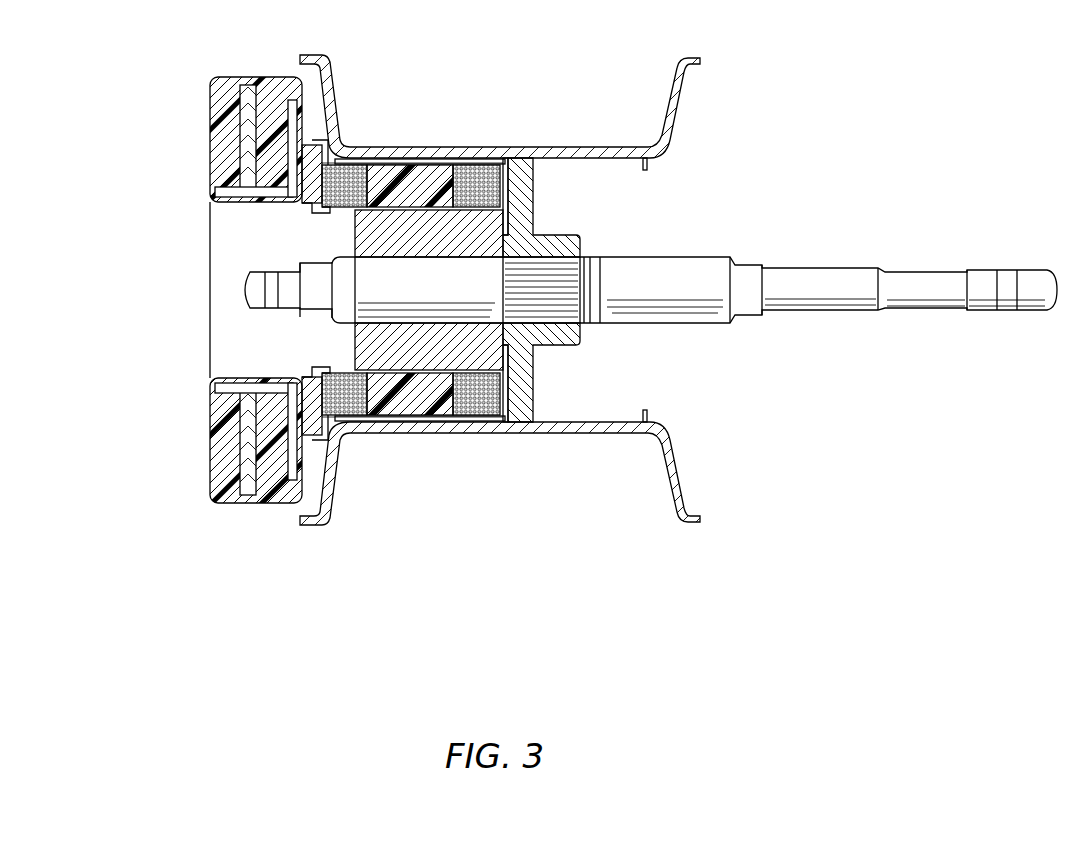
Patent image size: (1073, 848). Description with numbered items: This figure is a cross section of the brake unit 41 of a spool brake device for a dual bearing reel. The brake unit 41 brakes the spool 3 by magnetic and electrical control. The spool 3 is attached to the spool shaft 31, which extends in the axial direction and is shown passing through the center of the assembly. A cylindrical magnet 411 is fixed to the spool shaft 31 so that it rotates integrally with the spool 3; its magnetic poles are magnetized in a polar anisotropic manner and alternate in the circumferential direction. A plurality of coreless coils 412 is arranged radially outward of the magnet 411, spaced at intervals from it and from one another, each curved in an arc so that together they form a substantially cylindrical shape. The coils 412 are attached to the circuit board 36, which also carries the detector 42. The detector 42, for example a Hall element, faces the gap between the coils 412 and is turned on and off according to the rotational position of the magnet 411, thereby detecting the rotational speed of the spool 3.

The spool 3 is at (525, 128).
The spool shaft 31 is at (678, 257).
The circuit board 36 is at (285, 465).
The brake unit 41 is at (354, 333).
The magnet 411 is at (356, 342).
The coils 412 is at (510, 424).
The detector 42 is at (255, 180).